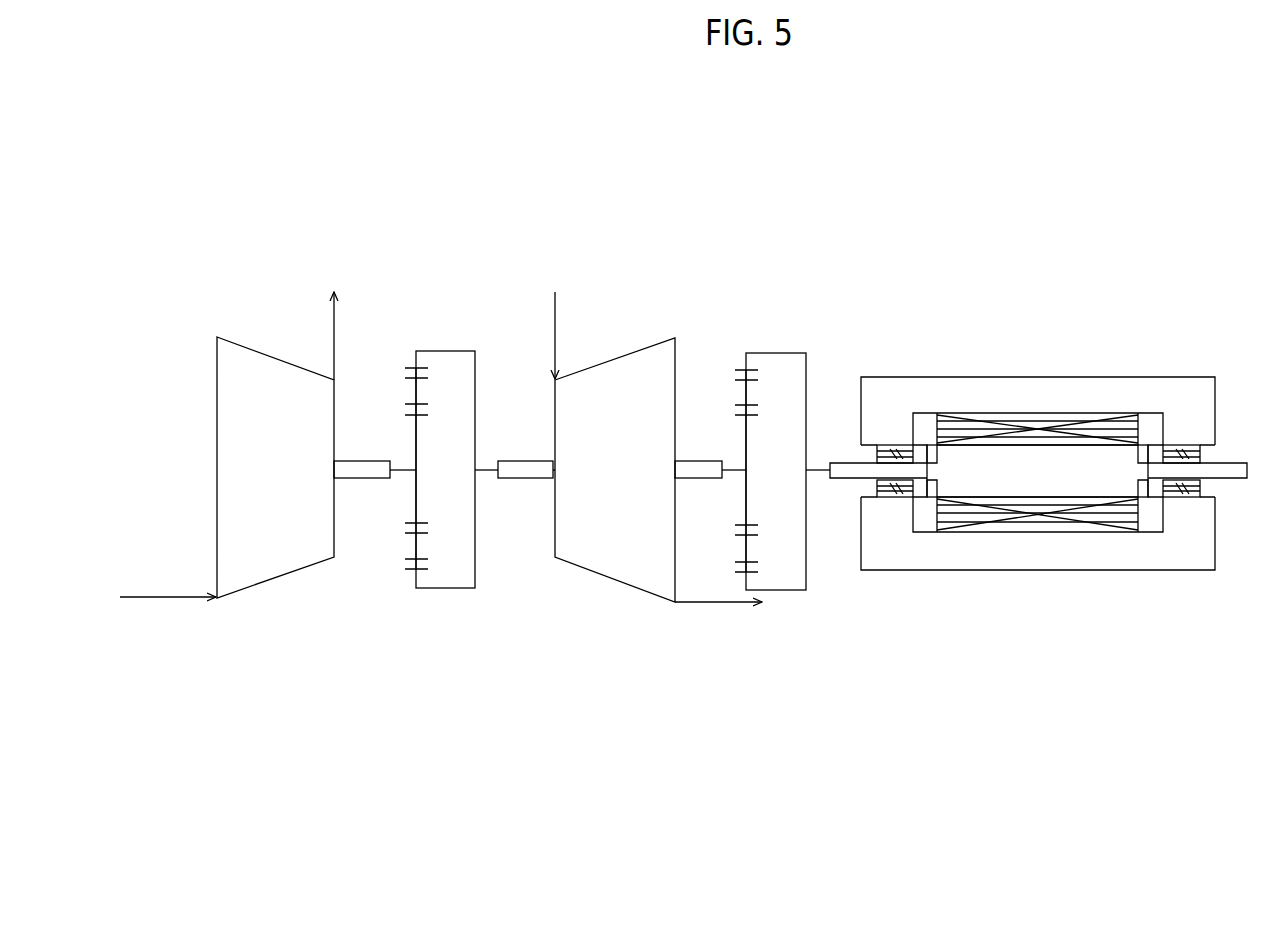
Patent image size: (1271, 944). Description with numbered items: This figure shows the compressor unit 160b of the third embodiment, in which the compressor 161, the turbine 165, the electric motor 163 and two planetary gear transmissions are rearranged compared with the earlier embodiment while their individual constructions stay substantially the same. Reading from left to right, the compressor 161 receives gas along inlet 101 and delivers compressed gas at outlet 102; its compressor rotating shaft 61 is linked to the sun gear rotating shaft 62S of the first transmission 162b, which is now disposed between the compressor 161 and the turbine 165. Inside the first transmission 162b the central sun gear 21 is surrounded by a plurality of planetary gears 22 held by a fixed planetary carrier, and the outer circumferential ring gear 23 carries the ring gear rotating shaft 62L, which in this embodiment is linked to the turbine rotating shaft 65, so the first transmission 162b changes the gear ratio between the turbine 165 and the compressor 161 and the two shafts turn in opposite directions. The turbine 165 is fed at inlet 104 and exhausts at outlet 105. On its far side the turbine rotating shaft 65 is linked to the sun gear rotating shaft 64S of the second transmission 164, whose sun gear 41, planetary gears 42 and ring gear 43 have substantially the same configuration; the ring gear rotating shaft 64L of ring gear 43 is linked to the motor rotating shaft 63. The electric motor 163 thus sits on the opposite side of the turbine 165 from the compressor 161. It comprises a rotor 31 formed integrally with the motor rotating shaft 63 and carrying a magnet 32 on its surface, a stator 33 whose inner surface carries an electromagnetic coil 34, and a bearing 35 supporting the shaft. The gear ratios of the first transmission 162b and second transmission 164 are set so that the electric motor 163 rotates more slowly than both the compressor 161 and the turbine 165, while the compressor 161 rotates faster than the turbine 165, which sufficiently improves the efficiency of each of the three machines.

The compressor unit 160b is at (1163, 172).
The compressor 161 is at (270, 581).
The first transmission 162b is at (413, 405).
The electric motor 163 is at (1052, 397).
The second transmission 164 is at (744, 406).
The turbine 165 is at (612, 581).
The intake air 101 is at (168, 598).
The compressed air 102 is at (333, 325).
The combustion gas 104 is at (556, 321).
The exhaust gas 105 is at (714, 603).
The sun gear 21 is at (420, 438).
The planetary gears 22 is at (410, 548).
The ring gear 23 is at (423, 350).
The sun gear 41 is at (750, 440).
The planetary gears 42 is at (742, 550).
The ring gear 43 is at (753, 352).
The rotor 31 is at (1042, 445).
The magnet 32 is at (912, 438).
The stator 33 is at (995, 377).
The electromagnetic coil 34 is at (936, 426).
The bearing 35 is at (1214, 490).
The compressor rotating shaft 61 is at (356, 479).
The sun gear rotating shaft 62S is at (403, 475).
The ring gear rotating shaft 62L is at (490, 479).
The motor rotating shaft 63 is at (1236, 482).
The ring gear rotating shaft 64L is at (815, 479).
The sun gear rotating shaft 64S is at (733, 474).
The turbine rotating shaft 65 is at (527, 479).